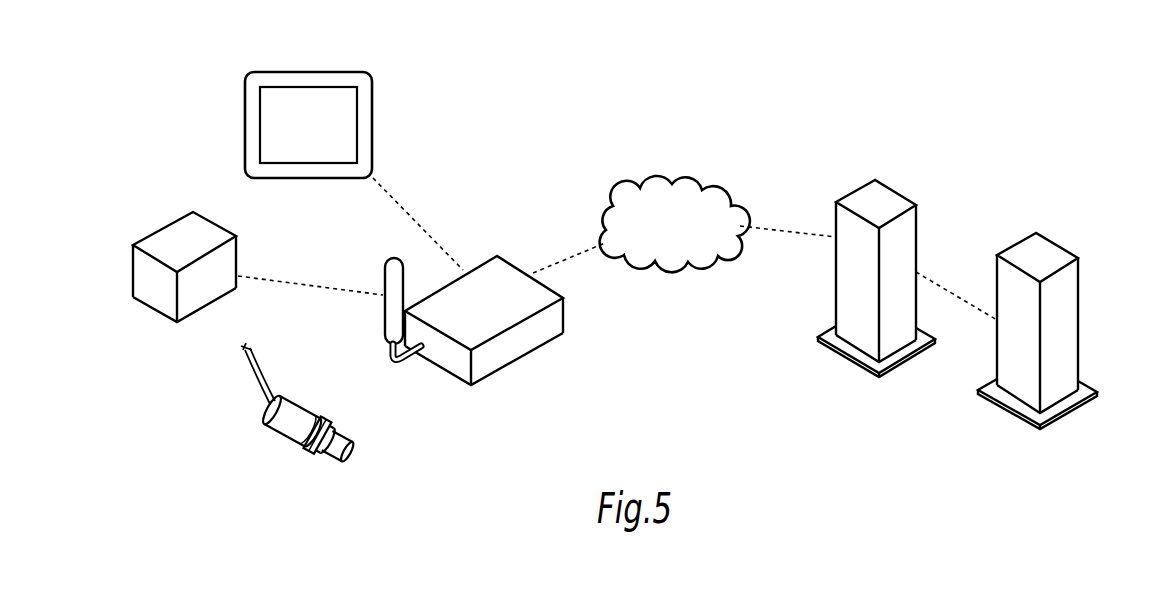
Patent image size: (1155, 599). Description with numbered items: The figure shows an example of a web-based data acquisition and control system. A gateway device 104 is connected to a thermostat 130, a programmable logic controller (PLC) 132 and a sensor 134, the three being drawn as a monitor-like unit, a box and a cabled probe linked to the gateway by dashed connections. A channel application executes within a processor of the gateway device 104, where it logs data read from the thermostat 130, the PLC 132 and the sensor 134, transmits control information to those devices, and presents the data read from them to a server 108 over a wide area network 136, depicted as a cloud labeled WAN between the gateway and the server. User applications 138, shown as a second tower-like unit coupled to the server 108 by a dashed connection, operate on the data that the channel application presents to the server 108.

The gateway device 104 is at (471, 386).
The server 108 is at (874, 183).
The thermostat 130 is at (308, 72).
The programmable logic controller (PLC) 132 is at (193, 213).
The sensor 134 is at (333, 462).
The wide area network 136 is at (669, 183).
The user applications 138 is at (1036, 235).